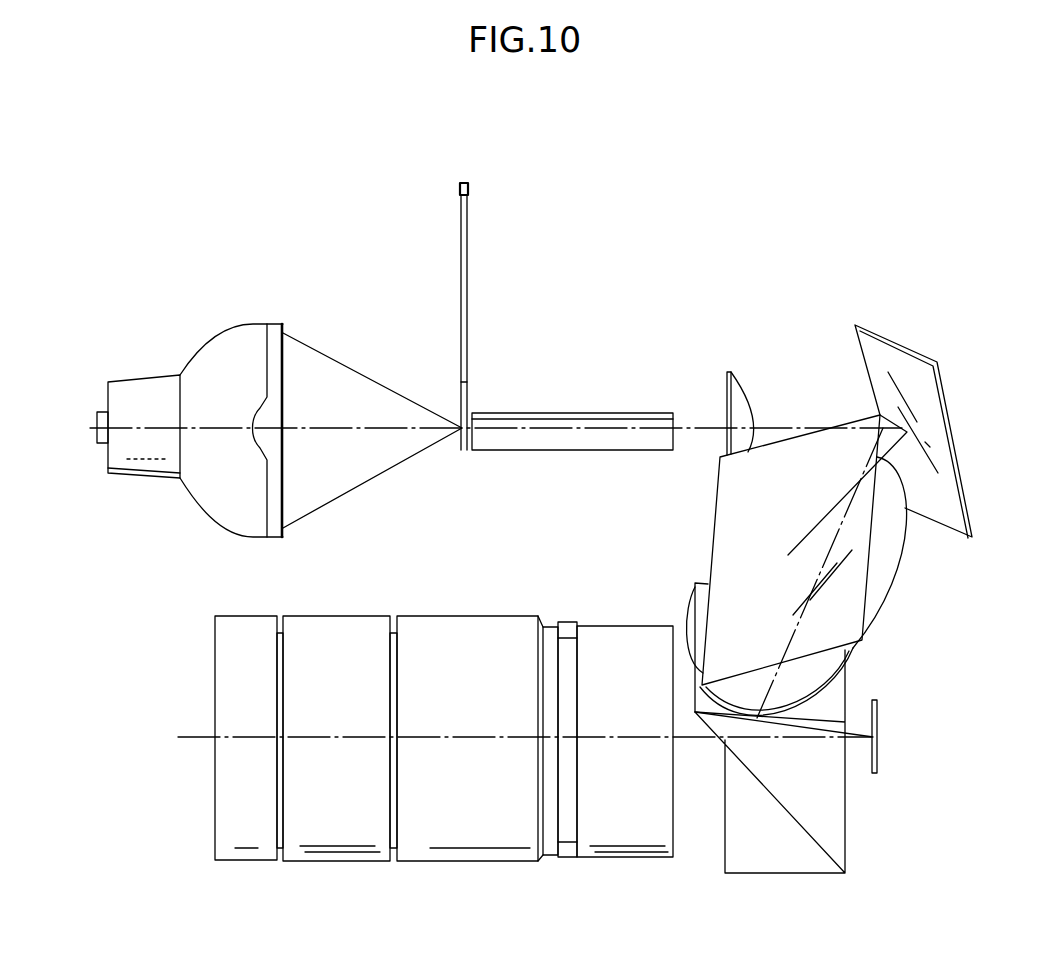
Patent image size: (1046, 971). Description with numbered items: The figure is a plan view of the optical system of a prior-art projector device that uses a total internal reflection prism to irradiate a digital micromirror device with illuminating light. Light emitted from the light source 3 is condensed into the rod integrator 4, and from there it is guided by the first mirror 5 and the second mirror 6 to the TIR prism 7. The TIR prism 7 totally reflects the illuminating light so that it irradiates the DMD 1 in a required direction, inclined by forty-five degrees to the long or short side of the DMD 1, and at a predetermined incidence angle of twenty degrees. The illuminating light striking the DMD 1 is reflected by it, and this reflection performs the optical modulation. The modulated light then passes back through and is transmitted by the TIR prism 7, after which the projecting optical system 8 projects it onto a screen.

The DMD 1 is at (879, 711).
The light source 3 is at (224, 354).
The rod integrator 4 is at (563, 413).
The first mirror 5 is at (884, 352).
The second mirror 6 is at (737, 526).
The TIR prism 7 is at (837, 832).
The projecting optical system 8 is at (435, 848).